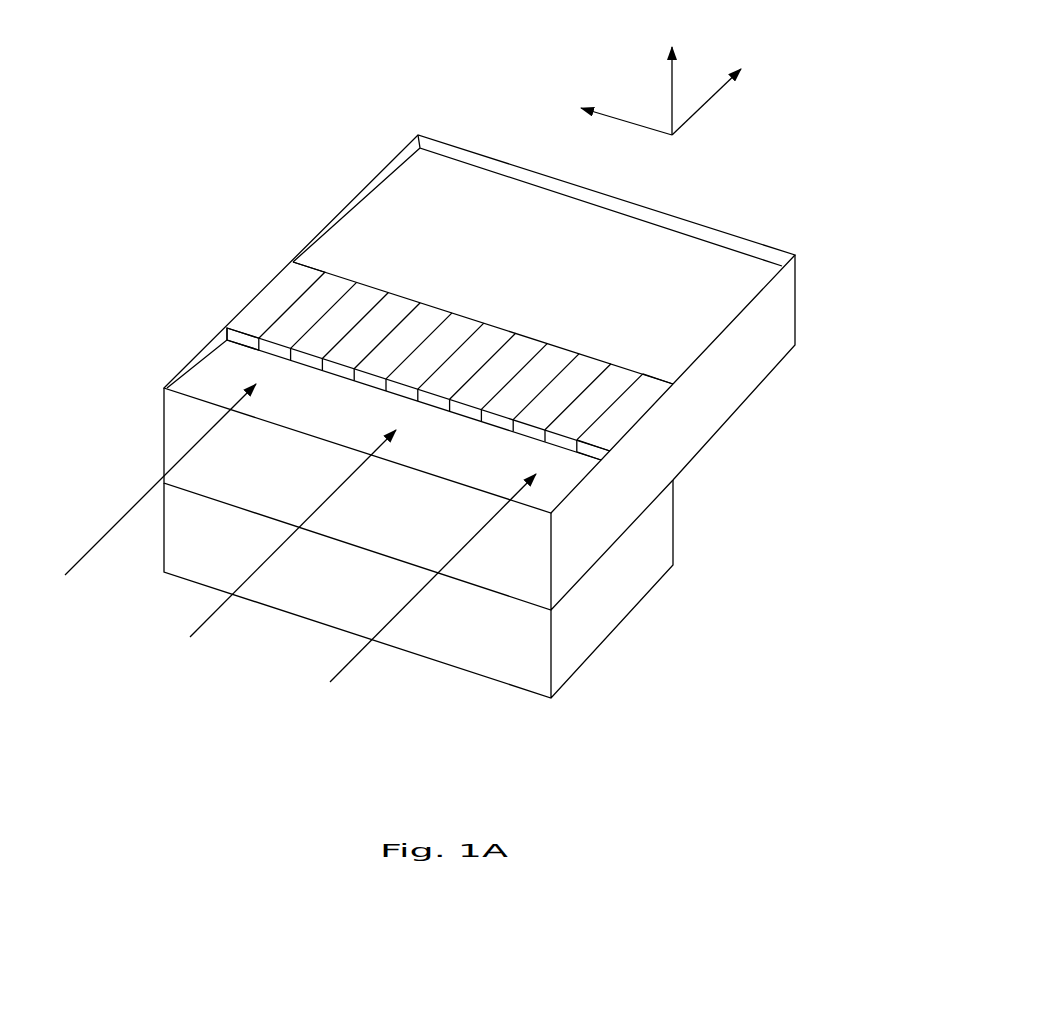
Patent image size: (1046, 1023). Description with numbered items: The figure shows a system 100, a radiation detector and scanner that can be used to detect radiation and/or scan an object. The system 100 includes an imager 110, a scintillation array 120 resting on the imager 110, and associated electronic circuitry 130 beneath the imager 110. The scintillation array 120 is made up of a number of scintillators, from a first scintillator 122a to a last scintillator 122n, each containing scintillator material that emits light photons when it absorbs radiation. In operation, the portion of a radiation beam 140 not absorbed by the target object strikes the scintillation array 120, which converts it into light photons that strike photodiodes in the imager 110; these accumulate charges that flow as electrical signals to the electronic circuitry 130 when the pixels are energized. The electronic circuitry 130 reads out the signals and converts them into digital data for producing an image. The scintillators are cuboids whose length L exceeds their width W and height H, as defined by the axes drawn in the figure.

The system 100 is at (360, 87).
The imager 110 is at (545, 253).
The scintillation array 120 is at (274, 261).
The scintillator 122a is at (266, 295).
The scintillator 122n is at (622, 432).
The electronic circuitry 130 is at (608, 635).
The radiation beam 140 is at (200, 675).